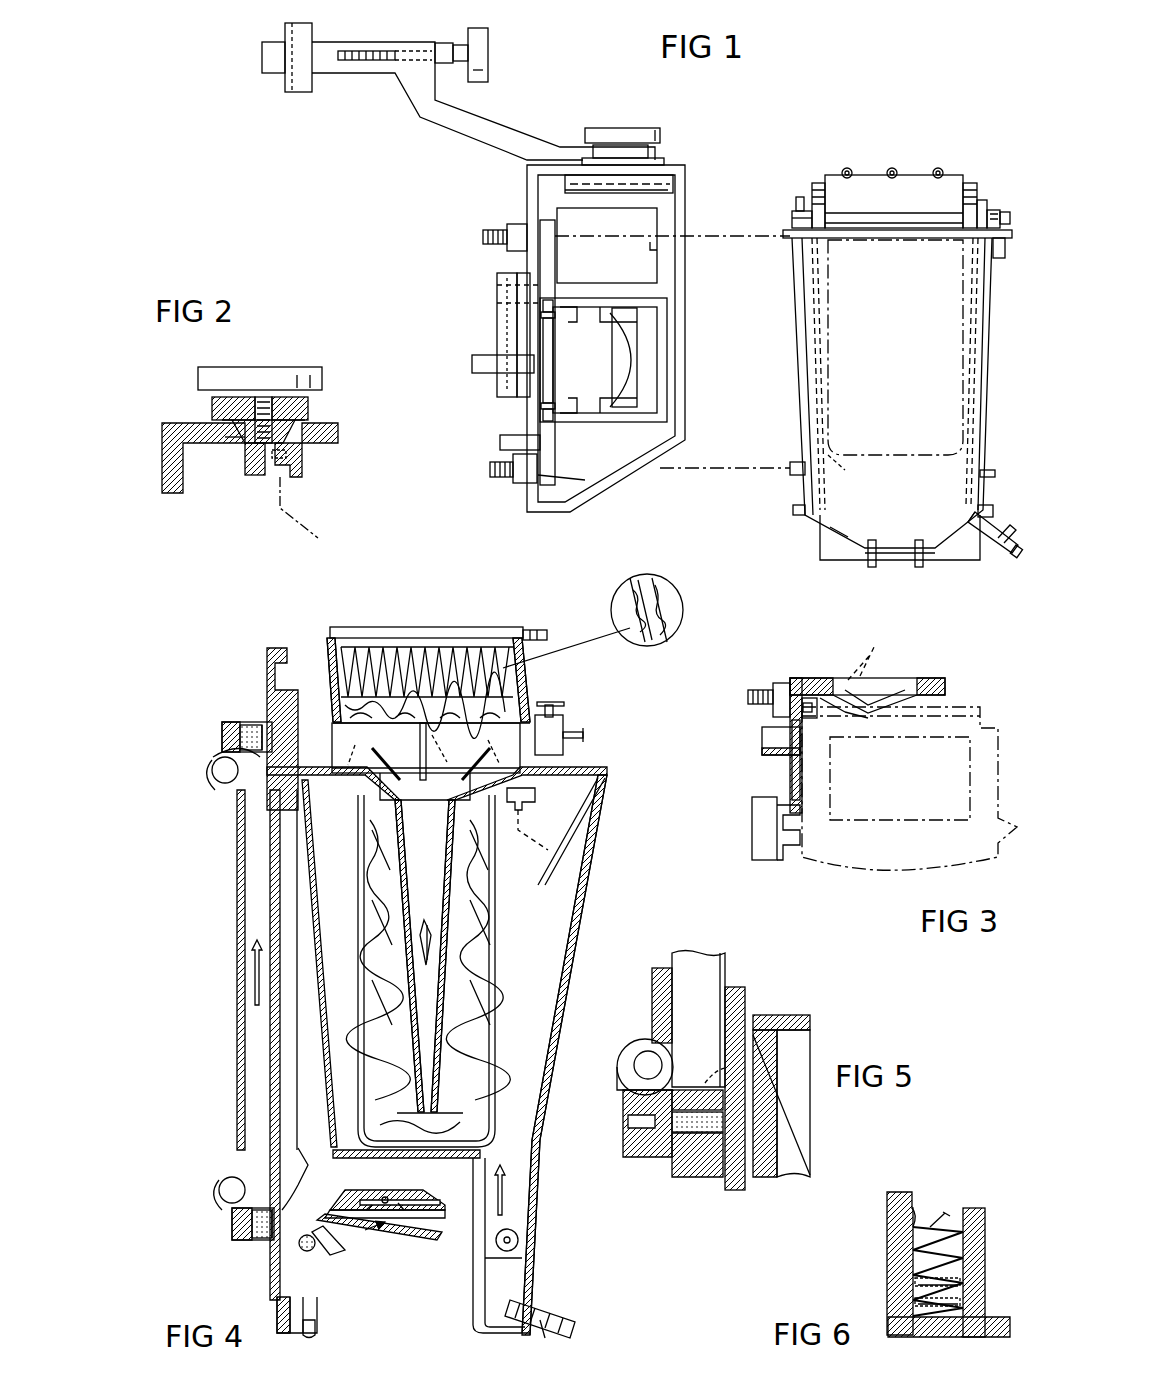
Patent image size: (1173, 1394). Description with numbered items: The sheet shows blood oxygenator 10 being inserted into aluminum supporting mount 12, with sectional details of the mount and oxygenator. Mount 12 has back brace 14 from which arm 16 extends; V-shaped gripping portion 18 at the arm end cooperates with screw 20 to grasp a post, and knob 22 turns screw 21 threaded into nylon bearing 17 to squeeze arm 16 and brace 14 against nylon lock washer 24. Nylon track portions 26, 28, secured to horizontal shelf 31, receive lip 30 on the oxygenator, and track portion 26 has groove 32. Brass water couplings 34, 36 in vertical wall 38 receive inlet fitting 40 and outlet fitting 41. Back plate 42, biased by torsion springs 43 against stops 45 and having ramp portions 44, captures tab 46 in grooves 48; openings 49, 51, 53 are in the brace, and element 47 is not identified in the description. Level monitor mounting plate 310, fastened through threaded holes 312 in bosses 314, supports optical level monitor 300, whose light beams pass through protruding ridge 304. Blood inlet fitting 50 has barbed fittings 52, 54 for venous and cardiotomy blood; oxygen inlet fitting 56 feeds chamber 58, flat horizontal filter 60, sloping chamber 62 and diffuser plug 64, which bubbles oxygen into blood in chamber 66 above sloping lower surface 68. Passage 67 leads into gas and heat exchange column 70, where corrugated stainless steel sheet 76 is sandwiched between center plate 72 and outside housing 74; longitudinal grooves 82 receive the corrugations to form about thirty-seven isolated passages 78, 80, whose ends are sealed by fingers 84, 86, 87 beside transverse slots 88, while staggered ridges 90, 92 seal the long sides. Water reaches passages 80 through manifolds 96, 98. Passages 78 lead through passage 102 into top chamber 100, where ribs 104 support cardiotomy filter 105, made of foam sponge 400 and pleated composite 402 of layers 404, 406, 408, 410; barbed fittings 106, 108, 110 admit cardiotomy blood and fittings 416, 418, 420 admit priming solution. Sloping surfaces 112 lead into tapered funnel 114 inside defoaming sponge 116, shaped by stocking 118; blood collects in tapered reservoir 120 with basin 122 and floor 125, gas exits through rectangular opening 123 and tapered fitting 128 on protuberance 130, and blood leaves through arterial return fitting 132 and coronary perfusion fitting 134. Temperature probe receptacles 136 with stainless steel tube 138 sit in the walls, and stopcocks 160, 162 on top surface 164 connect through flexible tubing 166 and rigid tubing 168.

In FIG. 1, the blood oxygenator 10 is at (940, 148).
In FIG. 3, the blood oxygenator 10 is at (1003, 725).
In FIG. 1, the aluminum supporting mount 12 is at (715, 145).
In FIG. 1, the back brace 14 is at (690, 285).
In FIG. 2, the back brace 14 is at (217, 448).
In FIG. 3, the back brace 14 is at (950, 688).
In FIG. 1, the arm 16 is at (482, 128).
In FIG. 2, the arm 16 is at (215, 406).
In FIG. 2, the nylon bearing 17 is at (240, 440).
In FIG. 1, the V-shaped gripping portion 18 is at (300, 92).
In FIG. 1, the screw 20 is at (385, 62).
In FIG. 2, the screw 21 is at (263, 395).
In FIG. 1, the knob 22 is at (640, 128).
In FIG. 2, the knob 22 is at (285, 372).
In FIG. 2, the nylon lock washer 24 is at (305, 421).
In FIG. 1, the nylon track portion 26 is at (665, 191).
In FIG. 2, the nylon track portion 26 is at (295, 470).
In FIG. 2, the nylon track portion 28 is at (252, 462).
In FIG. 1, the lip 30 is at (817, 178).
In FIG. 2, the lip 30 is at (307, 516).
In FIG. 4, the lip 30 is at (268, 672).
In FIG. 1, the horizontal shelf 31 is at (660, 162).
In FIG. 2, the horizontal shelf 31 is at (322, 425).
In FIG. 1, the groove 32 is at (678, 184).
In FIG. 2, the groove 32 is at (300, 453).
In FIG. 1, the brass water coupling 34 is at (515, 225).
In FIG. 1, the brass water coupling 36 is at (515, 485).
In FIG. 3, the brass water coupling 36 is at (778, 695).
In FIG. 1, the vertical wall 38 is at (540, 267).
In FIG. 3, the vertical wall 38 is at (790, 726).
In FIG. 1, the inlet fitting 40 is at (795, 460).
In FIG. 1, the outlet fitting 41 is at (790, 231).
In FIG. 1, the back plate 42 is at (645, 375).
In FIG. 3, the back plate 42 is at (865, 653).
In FIG. 1, the torsion springs 43 is at (550, 400).
In FIG. 1, the ramp portions 44 is at (578, 300).
In FIG. 3, the ramp portions 44 is at (838, 706).
In FIG. 1, the stops 45 is at (623, 357).
In FIG. 3, the stops 45 is at (880, 703).
In FIG. 3, the tab 46 is at (822, 703).
In FIG. 1, the diaphragm plate 47 is at (637, 307).
In FIG. 3, the diaphragm plate 47 is at (905, 680).
In FIG. 1, the grooves 48 is at (556, 306).
In FIG. 3, the grooves 48 is at (818, 712).
In FIG. 1, the opening 49 is at (658, 254).
In FIG. 1, the blood inlet fitting 50 is at (988, 555).
In FIG. 4, the blood inlet fitting 50 is at (320, 1330).
In FIG. 1, the opening 51 is at (660, 332).
In FIG. 3, the opening 51 is at (912, 680).
In FIG. 1, the barbed fitting 52 is at (1018, 556).
In FIG. 1, the opening 53 is at (587, 476).
In FIG. 1, the barbed fitting 54 is at (1012, 528).
In FIG. 1, the oxygen inlet fitting 56 is at (990, 468).
In FIG. 4, the oxygen inlet fitting 56 is at (387, 1197).
In FIG. 4, the chamber 58 is at (420, 1203).
In FIG. 4, the flat horizontal filter 60 is at (405, 1218).
In FIG. 4, the downward sloping chamber 62 is at (385, 1230).
In FIG. 4, the diffuser plug 64 is at (322, 1262).
In FIG. 4, the chamber 66 is at (300, 1250).
In FIG. 5, the chamber 66 is at (792, 1165).
In FIG. 4, the passage 67 is at (308, 1215).
In FIG. 5, the passage 67 is at (765, 1098).
In FIG. 4, the sloping lower surface 68 is at (310, 1298).
In FIG. 4, the gas and heat exchange column 70 is at (236, 985).
In FIG. 4, the center plate 72 is at (280, 1060).
In FIG. 5, the center plate 72 is at (738, 995).
In FIG. 6, the center plate 72 is at (985, 1232).
In FIG. 3, the outside housing 74 is at (965, 706).
In FIG. 4, the outside housing 74 is at (240, 1060).
In FIG. 5, the outside housing 74 is at (660, 968).
In FIG. 6, the outside housing 74 is at (887, 1232).
In FIG. 4, the corrugated stainless steel sheet 76 is at (258, 1046).
In FIG. 5, the corrugated stainless steel sheet 76 is at (700, 963).
In FIG. 6, the corrugated stainless steel sheet 76 is at (945, 1225).
In FIG. 6, the passages 78 is at (953, 1268).
In FIG. 6, the passages 80 is at (935, 1258).
In FIG. 6, the elongated longitudinal grooves 82 is at (916, 1222).
In FIG. 4, the fingers 84 is at (245, 772).
In FIG. 5, the fingers 84 is at (705, 1082).
In FIG. 4, the fingers 86 is at (245, 727).
In FIG. 5, the fingers 86 is at (700, 1150).
In FIG. 5, the fingers 87 is at (688, 1090).
In FIG. 4, the transverse slots 88 is at (224, 736).
In FIG. 5, the transverse slots 88 is at (632, 1125).
In FIG. 6, the longitudinal ridges 90 is at (960, 1304).
In FIG. 6, the longitudinal ridges 92 is at (920, 1300).
In FIG. 4, the semicylindrical manifold 96 is at (219, 1192).
In FIG. 5, the semicylindrical manifold 96 is at (620, 1072).
In FIG. 4, the semicylindrical manifold 98 is at (222, 790).
In FIG. 4, the top chamber 100 is at (455, 705).
In FIG. 4, the passage 102 is at (270, 720).
In FIG. 4, the ribs 104 is at (375, 745).
In FIG. 4, the cardiotomy filter 105 is at (433, 690).
In FIG. 1, the barbed fitting 106 is at (847, 167).
In FIG. 1, the barbed fitting 108 is at (892, 167).
In FIG. 4, the barbed fitting 108 is at (540, 632).
In FIG. 1, the barbed fitting 110 is at (940, 167).
In FIG. 4, the sloping surfaces 112 is at (462, 785).
In FIG. 4, the tapered funnel 114 is at (450, 835).
In FIG. 4, the foam sponge 116 is at (483, 1040).
In FIG. 1, the stocking 118 is at (845, 458).
In FIG. 4, the stocking 118 is at (485, 1095).
In FIG. 4, the tapered reservoir 120 is at (545, 950).
In FIG. 1, the narrow lower basin 122 is at (840, 533).
In FIG. 4, the narrow lower basin 122 is at (517, 1290).
In FIG. 4, the rectangular opening 123 is at (535, 797).
In FIG. 4, the floor 125 is at (393, 1161).
In FIG. 1, the tapered fitting 128 is at (1002, 258).
In FIG. 4, the tapered fitting 128 is at (555, 850).
In FIG. 1, the triangular-shaped protuberance 130 is at (1016, 214).
In FIG. 1, the arterial return fitting 132 is at (870, 566).
In FIG. 4, the arterial return fitting 132 is at (572, 1320).
In FIG. 1, the coronary perfusion fitting 134 is at (920, 566).
In FIG. 1, the temperature probe receptacles 136 is at (790, 513).
In FIG. 4, the hollow stainless steel tube 138 is at (518, 1241).
In FIG. 1, the stopcock 160 is at (993, 212).
In FIG. 4, the stopcock 160 is at (585, 736).
In FIG. 1, the stopcock 162 is at (796, 206).
In FIG. 1, the top surface 164 is at (862, 230).
In FIG. 3, the top surface 164 is at (935, 850).
In FIG. 4, the top surface 164 is at (585, 760).
In FIG. 1, the flexible tubing 166 is at (985, 350).
In FIG. 1, the rigid plastic tubing 168 is at (812, 355).
In FIG. 1, the optical level monitor 300 is at (493, 385).
In FIG. 3, the optical level monitor 300 is at (750, 828).
In FIG. 1, the protruding ridge 304 is at (797, 392).
In FIG. 3, the protruding ridge 304 is at (800, 840).
In FIG. 1, the level monitor mounting plate 310 is at (500, 330).
In FIG. 3, the level monitor mounting plate 310 is at (792, 785).
In FIG. 1, the threaded holes 312 is at (518, 375).
In FIG. 1, the bosses 314 is at (497, 292).
In FIG. 3, the bosses 314 is at (762, 742).
In FIG. 4, the polyurethane foam sponge 400 is at (520, 709).
In FIG. 4, the pleated composite 402 is at (505, 670).
In FIG. 4, the layer 404 is at (666, 628).
In FIG. 4, the layer 406 is at (657, 640).
In FIG. 4, the layer 408 is at (645, 640).
In FIG. 4, the layer 410 is at (636, 640).
In FIG. 4, the fitting 416 is at (366, 762).
In FIG. 4, the fitting 418 is at (439, 751).
In FIG. 1, the fitting 420 is at (982, 203).
In FIG. 4, the fitting 420 is at (485, 760).